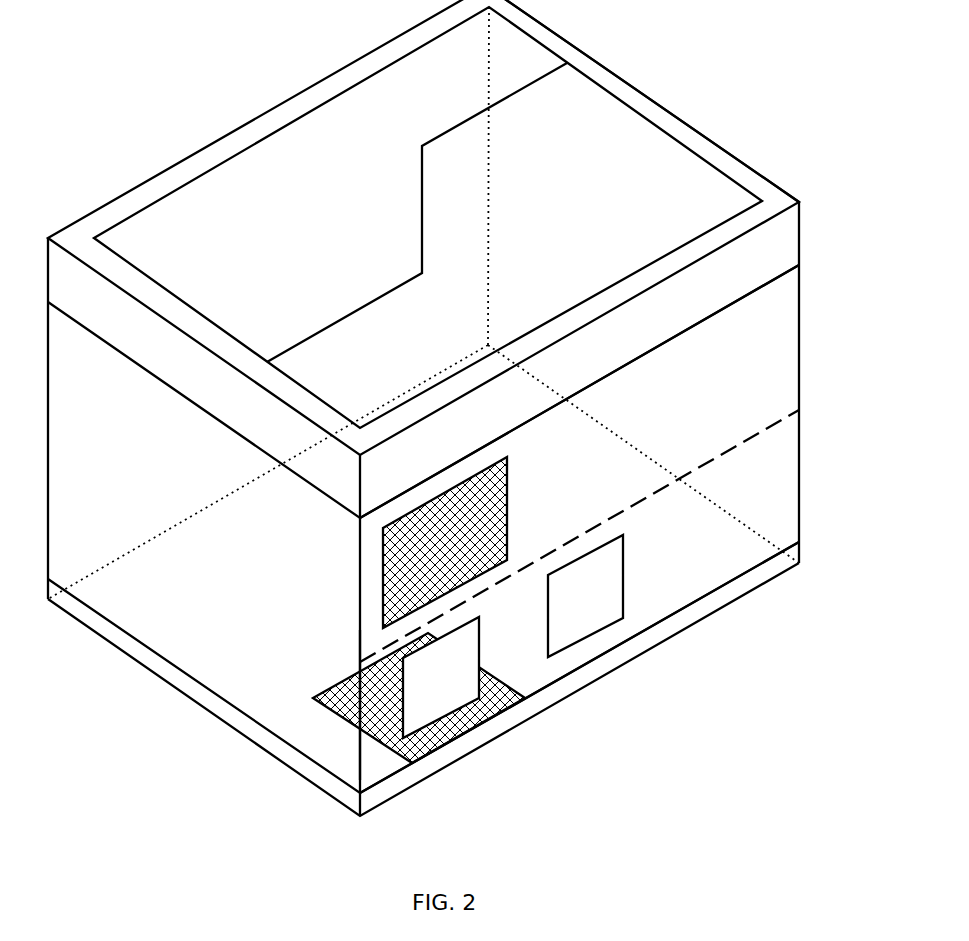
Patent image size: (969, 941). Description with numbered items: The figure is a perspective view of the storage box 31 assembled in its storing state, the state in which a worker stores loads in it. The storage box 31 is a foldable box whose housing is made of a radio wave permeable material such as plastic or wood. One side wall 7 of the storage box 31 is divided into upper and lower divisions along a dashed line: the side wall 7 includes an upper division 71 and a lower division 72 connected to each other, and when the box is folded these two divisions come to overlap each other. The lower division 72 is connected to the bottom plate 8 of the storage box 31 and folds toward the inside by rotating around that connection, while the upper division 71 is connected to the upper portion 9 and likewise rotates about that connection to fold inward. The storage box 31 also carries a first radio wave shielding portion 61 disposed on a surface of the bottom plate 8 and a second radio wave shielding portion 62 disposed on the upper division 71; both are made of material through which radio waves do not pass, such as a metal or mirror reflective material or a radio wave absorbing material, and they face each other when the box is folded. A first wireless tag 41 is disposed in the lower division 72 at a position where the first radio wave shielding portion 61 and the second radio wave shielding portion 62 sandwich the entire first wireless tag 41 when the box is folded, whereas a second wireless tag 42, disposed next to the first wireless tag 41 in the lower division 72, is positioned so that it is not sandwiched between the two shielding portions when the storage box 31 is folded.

The side wall 7 is at (798, 295).
The upper portion 9 is at (782, 242).
The storage box 31 is at (625, 80).
The upper division 71 is at (750, 392).
The lower division 72 is at (750, 472).
The bottom plate 8 is at (605, 447).
The second radio wave shielding portion 62 is at (508, 505).
The second wireless tag 42 is at (625, 572).
The first wireless tag 41 is at (480, 652).
The first radio wave shielding portion 61 is at (323, 690).